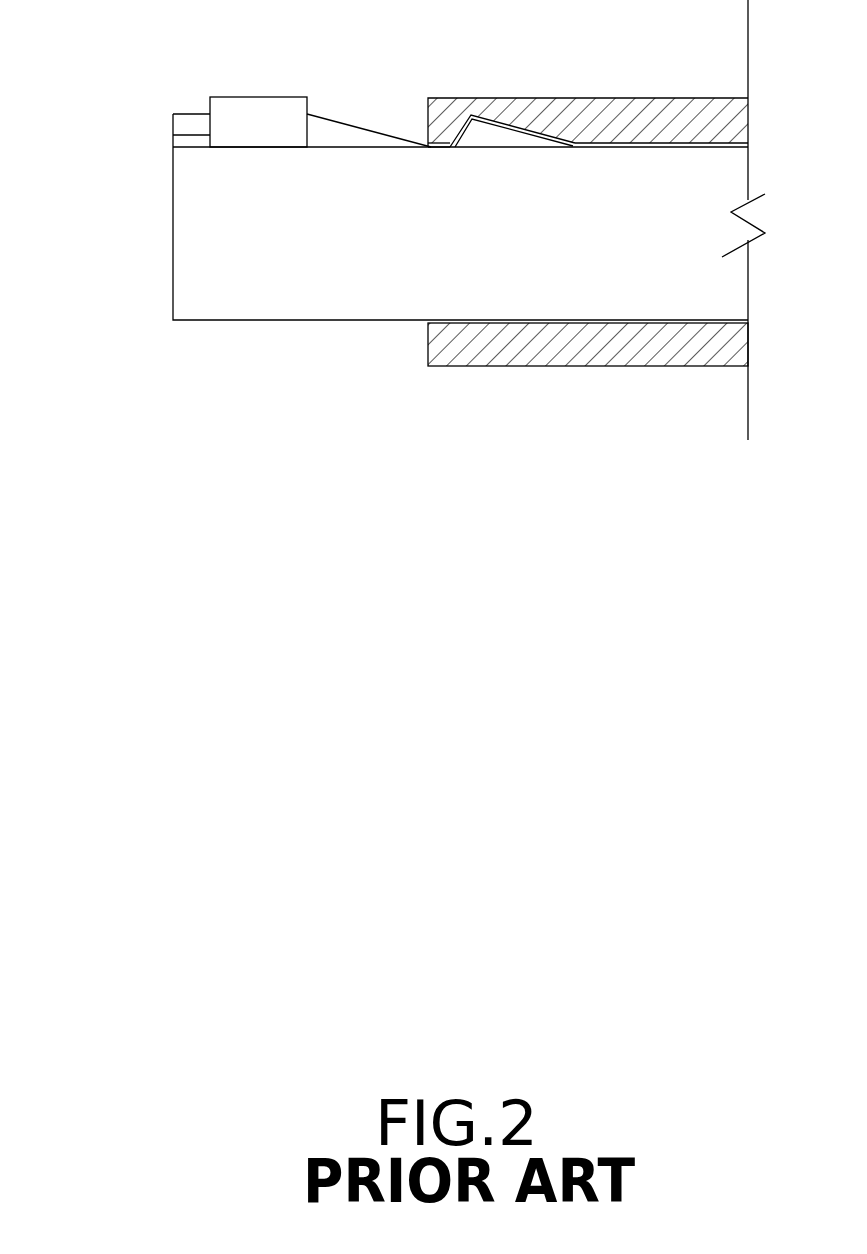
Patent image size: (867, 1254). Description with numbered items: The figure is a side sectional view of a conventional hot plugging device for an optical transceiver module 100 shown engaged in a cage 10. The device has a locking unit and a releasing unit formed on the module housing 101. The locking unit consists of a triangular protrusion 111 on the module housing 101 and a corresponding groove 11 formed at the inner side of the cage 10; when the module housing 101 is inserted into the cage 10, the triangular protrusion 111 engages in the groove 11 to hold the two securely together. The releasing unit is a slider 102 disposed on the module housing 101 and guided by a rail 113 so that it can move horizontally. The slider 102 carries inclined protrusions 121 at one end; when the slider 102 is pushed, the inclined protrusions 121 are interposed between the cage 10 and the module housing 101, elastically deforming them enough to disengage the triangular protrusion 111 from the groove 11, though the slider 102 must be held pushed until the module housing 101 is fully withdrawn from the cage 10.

The cage 10 is at (665, 112).
The groove 11 is at (483, 112).
The triangular protrusion 111 is at (495, 133).
The optical transceiver module 100 is at (145, 330).
The module housing 101 is at (369, 300).
The slider 102 is at (263, 110).
The rail 113 is at (188, 110).
The inclined protrusions 121 is at (358, 123).